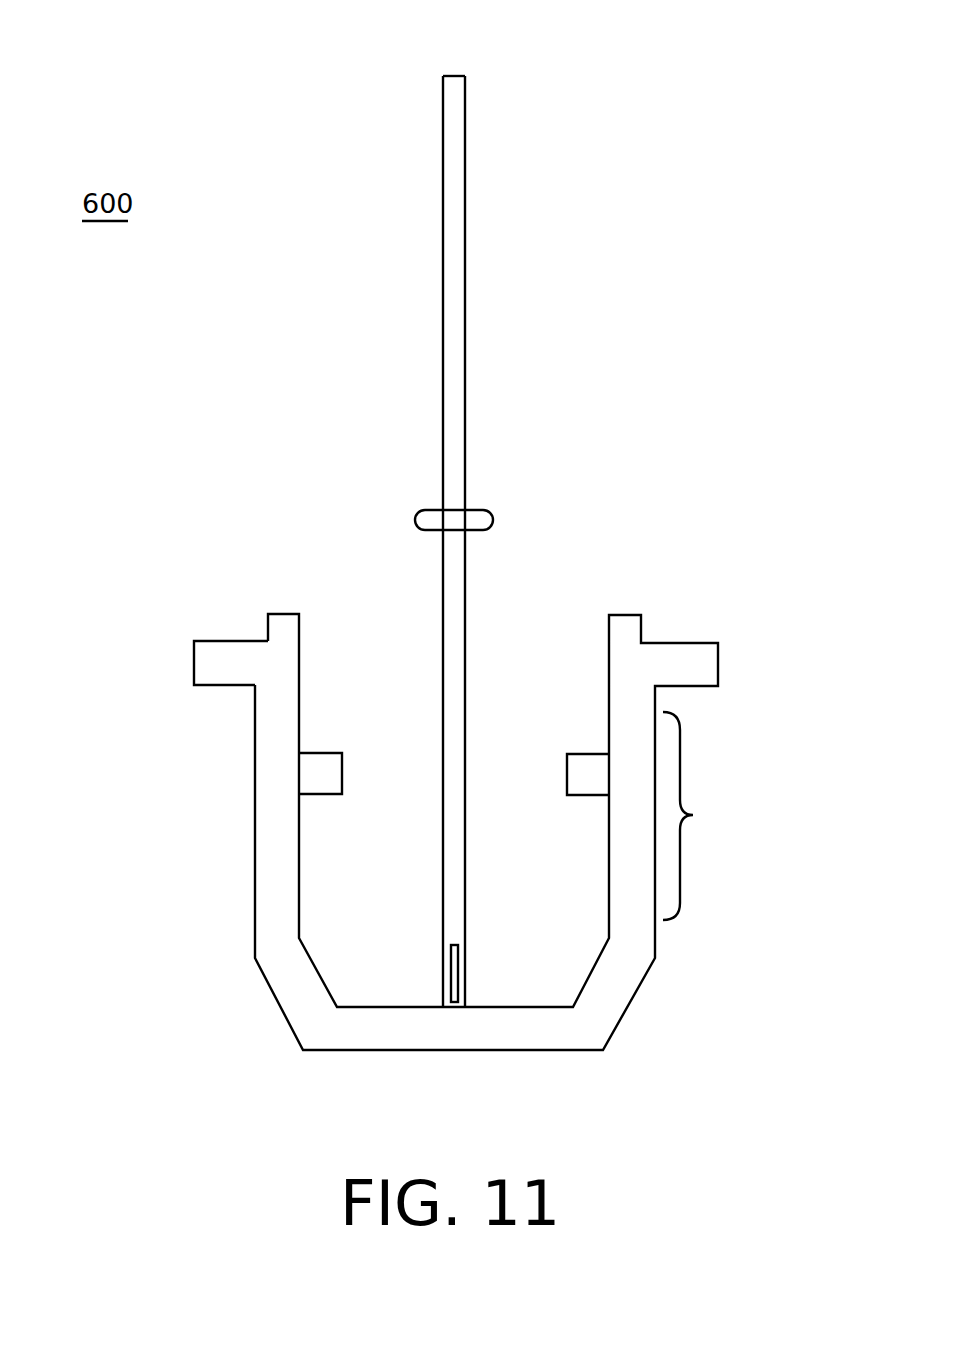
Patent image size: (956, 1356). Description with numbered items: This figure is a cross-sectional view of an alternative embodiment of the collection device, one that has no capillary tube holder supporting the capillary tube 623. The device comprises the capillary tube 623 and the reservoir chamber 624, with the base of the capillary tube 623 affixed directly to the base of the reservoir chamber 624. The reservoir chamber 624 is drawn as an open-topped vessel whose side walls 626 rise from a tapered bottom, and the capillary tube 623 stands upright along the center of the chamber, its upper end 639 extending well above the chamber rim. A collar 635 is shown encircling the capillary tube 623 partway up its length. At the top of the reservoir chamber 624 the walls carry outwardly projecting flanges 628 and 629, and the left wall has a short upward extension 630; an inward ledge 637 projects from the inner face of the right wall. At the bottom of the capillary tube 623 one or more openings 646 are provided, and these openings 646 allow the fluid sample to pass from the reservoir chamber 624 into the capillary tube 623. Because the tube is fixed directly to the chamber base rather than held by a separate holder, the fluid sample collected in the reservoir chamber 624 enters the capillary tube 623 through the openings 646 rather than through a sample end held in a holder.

The capillary tube 623 is at (470, 350).
The reservoir chamber 624 is at (360, 958).
The wall 626 is at (708, 816).
The left flange 628 is at (190, 667).
The right flange 629 is at (722, 660).
The upper extension 630 is at (278, 608).
The collar 635 is at (498, 514).
The ledge 637 is at (586, 748).
The rod tip 639 is at (450, 66).
The openings 646 is at (456, 970).